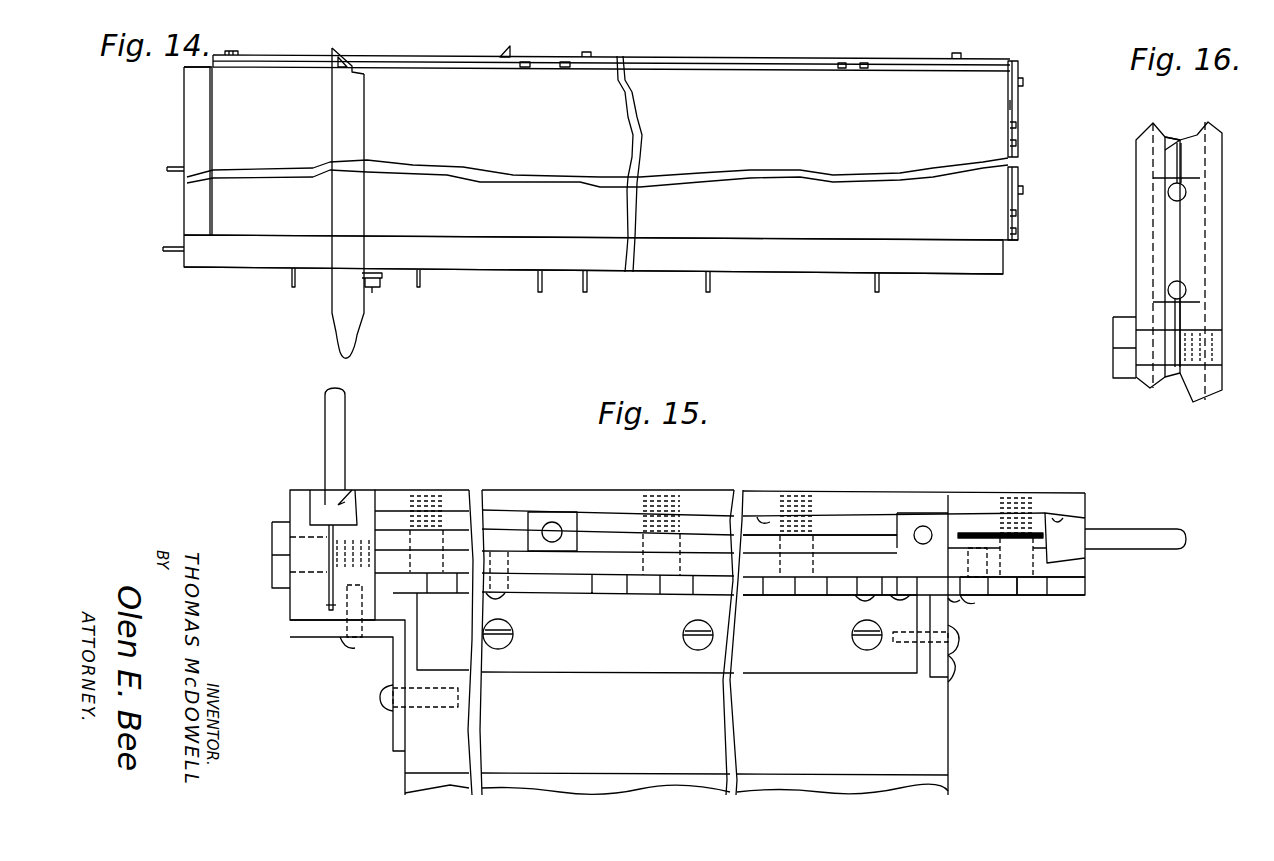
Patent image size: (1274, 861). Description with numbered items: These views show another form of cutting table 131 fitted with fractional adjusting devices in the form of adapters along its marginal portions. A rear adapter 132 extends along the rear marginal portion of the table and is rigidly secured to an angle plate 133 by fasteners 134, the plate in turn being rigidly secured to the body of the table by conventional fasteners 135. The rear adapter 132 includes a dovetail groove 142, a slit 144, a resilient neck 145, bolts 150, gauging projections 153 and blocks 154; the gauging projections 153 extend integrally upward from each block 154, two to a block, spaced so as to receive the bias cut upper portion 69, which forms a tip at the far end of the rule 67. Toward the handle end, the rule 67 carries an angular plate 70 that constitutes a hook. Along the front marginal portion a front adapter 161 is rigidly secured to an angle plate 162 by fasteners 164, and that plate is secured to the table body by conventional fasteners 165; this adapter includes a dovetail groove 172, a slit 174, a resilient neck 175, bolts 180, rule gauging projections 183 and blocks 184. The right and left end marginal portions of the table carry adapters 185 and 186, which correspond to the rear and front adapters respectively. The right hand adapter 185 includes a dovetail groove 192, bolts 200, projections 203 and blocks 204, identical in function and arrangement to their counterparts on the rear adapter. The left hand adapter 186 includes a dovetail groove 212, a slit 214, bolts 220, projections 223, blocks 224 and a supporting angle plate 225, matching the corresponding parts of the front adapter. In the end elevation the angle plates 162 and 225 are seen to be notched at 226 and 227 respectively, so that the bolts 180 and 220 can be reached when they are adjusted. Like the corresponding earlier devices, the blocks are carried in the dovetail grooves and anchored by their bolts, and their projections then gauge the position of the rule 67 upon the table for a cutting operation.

In FIG. 14, the rule 67 is at (360, 132).
In FIG. 14, the bias cut upper portion 69 is at (348, 62).
In FIG. 14, the angular plate 70 is at (372, 293).
In FIG. 14, the cutting table 131 is at (601, 165).
In FIG. 15, the cutting table 131 is at (928, 753).
In FIG. 14, the rear adapter 132 is at (278, 55).
In FIG. 16, the rear adapter 132 is at (1136, 285).
In FIG. 15, the rear adapter 132 is at (290, 496).
In FIG. 15, the angle plate 133 is at (330, 612).
In FIG. 15, the fasteners 134 is at (357, 640).
In FIG. 15, the fasteners 135 is at (386, 705).
In FIG. 16, the dovetail groove 142 is at (1170, 145).
In FIG. 15, the dovetail groove 142 is at (345, 506).
In FIG. 16, the slit 144 is at (1182, 164).
In FIG. 15, the slit 144 is at (332, 558).
In FIG. 15, the resilient neck 145 is at (331, 614).
In FIG. 14, the bolts 150 is at (590, 56).
In FIG. 16, the bolts 150 is at (1113, 365).
In FIG. 15, the bolts 150 is at (276, 595).
In FIG. 14, the gauging projections 153 is at (512, 56).
In FIG. 16, the gauging projections 153 is at (1186, 193).
In FIG. 15, the gauging projections 153 is at (345, 405).
In FIG. 14, the blocks 154 is at (840, 62).
In FIG. 16, the blocks 154 is at (1178, 251).
In FIG. 15, the blocks 154 is at (323, 503).
In FIG. 14, the front adapter 161 is at (262, 263).
In FIG. 15, the front adapter 161 is at (985, 500).
In FIG. 15, the angle plate 162 is at (1078, 590).
In FIG. 15, the fasteners 164 is at (985, 600).
In FIG. 15, the fasteners 165 is at (957, 660).
In FIG. 15, the dovetail groove 172 is at (1058, 518).
In FIG. 15, the slit 174 is at (1005, 532).
In FIG. 15, the resilient neck 175 is at (942, 535).
In FIG. 15, the bolts 180 is at (1032, 600).
In FIG. 14, the rule gauging projections 183 is at (585, 292).
In FIG. 15, the rule gauging projections 183 is at (1168, 547).
In FIG. 15, the blocks 184 is at (1080, 523).
In FIG. 14, the right hand adapter 185 is at (1020, 71).
In FIG. 14, the left hand adapter 186 is at (184, 118).
In FIG. 15, the left hand adapter 186 is at (511, 480).
In FIG. 14, the dovetail groove 192 is at (1005, 102).
In FIG. 14, the bolts 200 is at (1024, 82).
In FIG. 14, the projections 203 is at (1018, 144).
In FIG. 14, the blocks 204 is at (1016, 214).
In FIG. 15, the dovetail groove 212 is at (765, 520).
In FIG. 15, the slit 214 is at (840, 534).
In FIG. 15, the bolts 220 is at (770, 598).
In FIG. 14, the projections 223 is at (163, 249).
In FIG. 15, the projections 223 is at (553, 523).
In FIG. 15, the blocks 224 is at (568, 521).
In FIG. 15, the supporting angle plate 225 is at (848, 665).
In FIG. 15, the notch 226 is at (955, 603).
In FIG. 15, the notch 227 is at (603, 578).